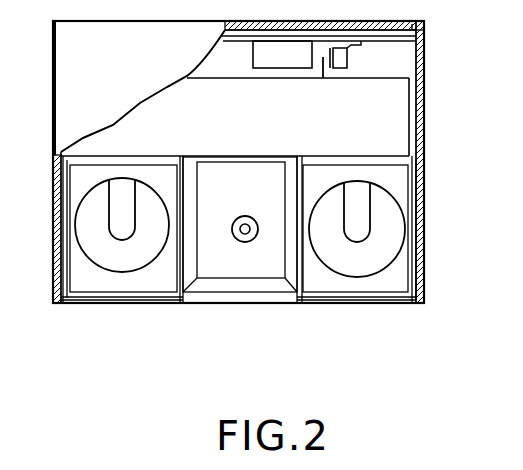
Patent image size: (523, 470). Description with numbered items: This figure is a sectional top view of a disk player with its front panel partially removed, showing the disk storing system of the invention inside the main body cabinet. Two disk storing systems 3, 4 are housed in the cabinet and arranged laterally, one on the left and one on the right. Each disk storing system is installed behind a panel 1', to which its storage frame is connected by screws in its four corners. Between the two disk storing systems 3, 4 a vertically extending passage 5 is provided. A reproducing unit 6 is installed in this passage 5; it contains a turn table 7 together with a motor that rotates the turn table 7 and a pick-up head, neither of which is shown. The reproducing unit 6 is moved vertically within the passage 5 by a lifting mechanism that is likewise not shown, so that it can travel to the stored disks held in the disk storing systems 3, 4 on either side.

The panel 1' is at (239, 264).
The disk storing system 3 is at (82, 272).
The disk storing system 4 is at (403, 257).
The vertically extending passage 5 is at (167, 305).
The reproducing unit 6 is at (270, 276).
The turn table 7 is at (237, 241).